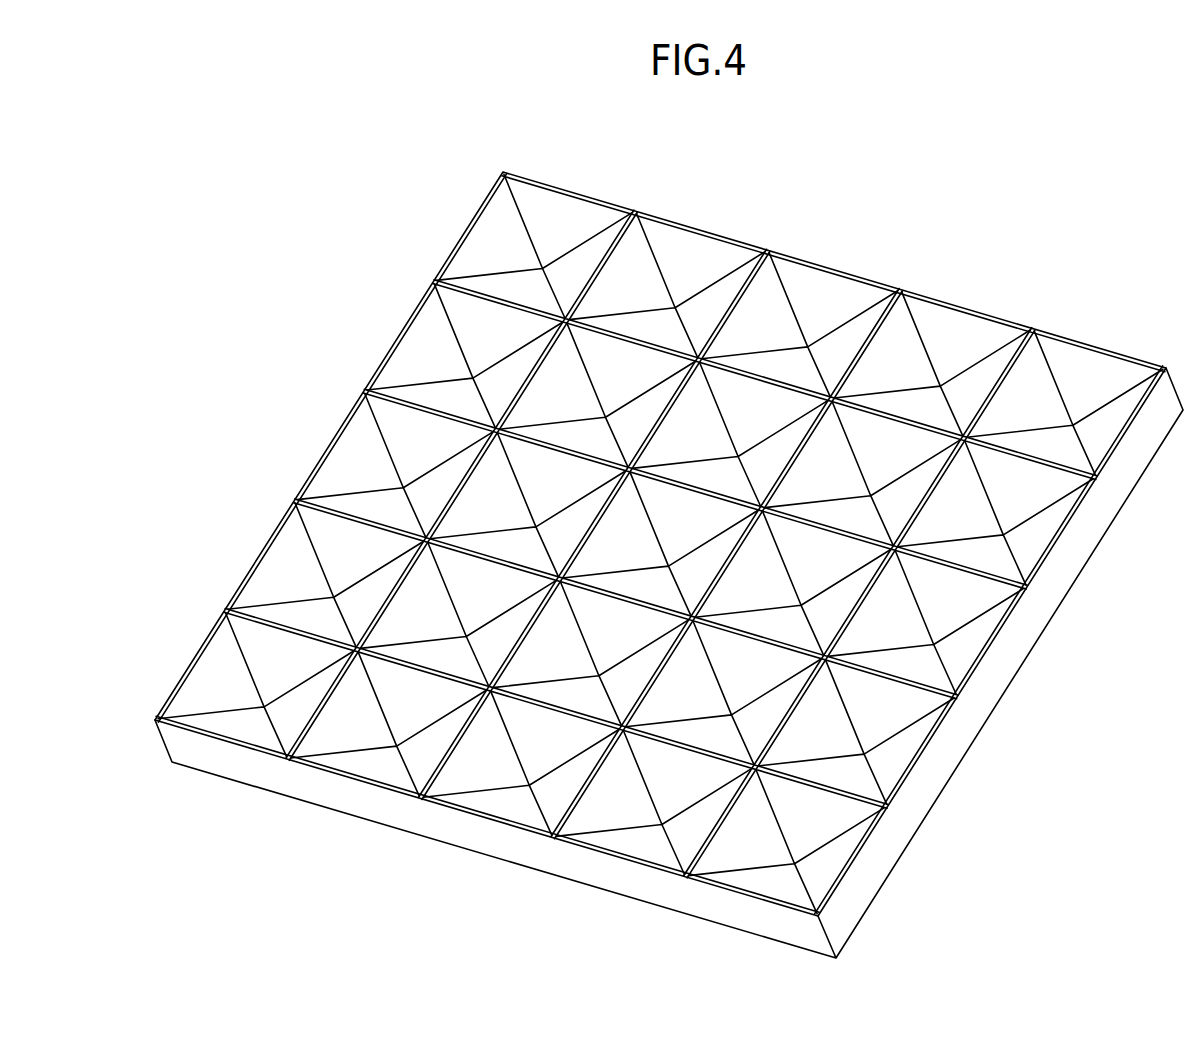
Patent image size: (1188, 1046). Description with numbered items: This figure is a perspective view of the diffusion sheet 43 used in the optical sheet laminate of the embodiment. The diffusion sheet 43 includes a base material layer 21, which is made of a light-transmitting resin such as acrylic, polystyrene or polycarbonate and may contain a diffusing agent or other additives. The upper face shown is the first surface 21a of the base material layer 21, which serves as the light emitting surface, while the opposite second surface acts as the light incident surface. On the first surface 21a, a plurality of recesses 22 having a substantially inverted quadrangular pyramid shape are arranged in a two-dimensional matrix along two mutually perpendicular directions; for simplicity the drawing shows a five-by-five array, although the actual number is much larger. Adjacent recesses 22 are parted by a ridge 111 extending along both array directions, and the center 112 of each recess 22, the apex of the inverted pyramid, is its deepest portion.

The base material layer 21 is at (1027, 638).
The first surface 21a is at (1088, 343).
The recess 22 is at (684, 248).
The diffusion sheet 43 is at (922, 205).
The ridge 111 is at (527, 369).
The center 112 is at (407, 488).